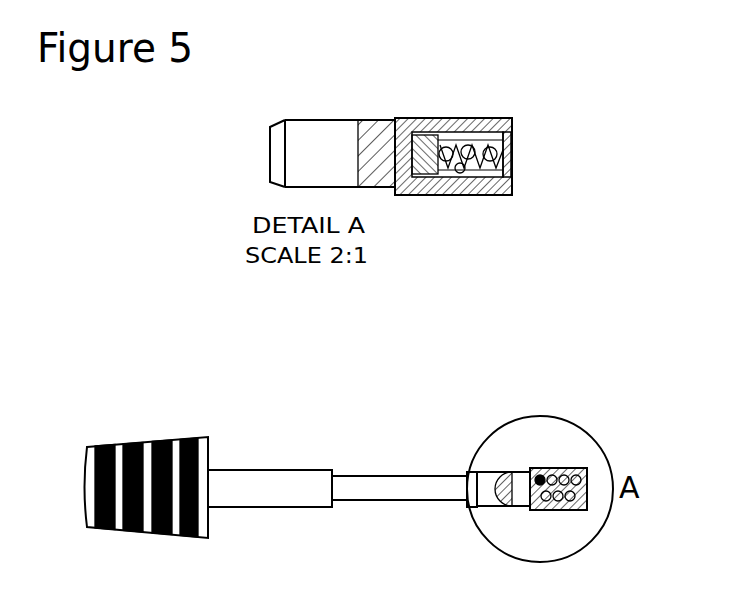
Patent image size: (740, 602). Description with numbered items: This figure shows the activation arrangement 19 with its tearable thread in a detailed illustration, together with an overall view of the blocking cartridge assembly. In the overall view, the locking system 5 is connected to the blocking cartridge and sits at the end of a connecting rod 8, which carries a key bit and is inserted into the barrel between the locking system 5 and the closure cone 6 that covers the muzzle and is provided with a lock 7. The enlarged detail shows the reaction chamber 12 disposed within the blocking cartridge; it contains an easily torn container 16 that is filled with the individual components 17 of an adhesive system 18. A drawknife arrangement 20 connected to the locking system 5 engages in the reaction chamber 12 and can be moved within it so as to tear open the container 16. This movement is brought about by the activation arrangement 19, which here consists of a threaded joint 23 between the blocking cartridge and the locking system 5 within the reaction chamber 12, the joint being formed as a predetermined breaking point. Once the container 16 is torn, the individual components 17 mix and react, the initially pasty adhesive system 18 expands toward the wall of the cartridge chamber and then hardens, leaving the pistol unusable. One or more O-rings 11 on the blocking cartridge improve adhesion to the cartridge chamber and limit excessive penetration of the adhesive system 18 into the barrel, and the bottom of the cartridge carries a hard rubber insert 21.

The locking system 5 is at (484, 486).
The closure cone 6 is at (175, 444).
The lock 7 is at (148, 476).
The connecting rod 8 is at (372, 486).
The O-ring 11 is at (508, 198).
The reaction chamber 12 is at (487, 118).
The container 16 is at (460, 118).
The individual components 17 is at (470, 168).
The adhesive system 18 is at (574, 470).
The activation arrangement 19 is at (534, 470).
The drawknife arrangement 20 is at (428, 118).
The hard rubber insert 21 is at (520, 140).
The threaded joint 23 is at (387, 117).